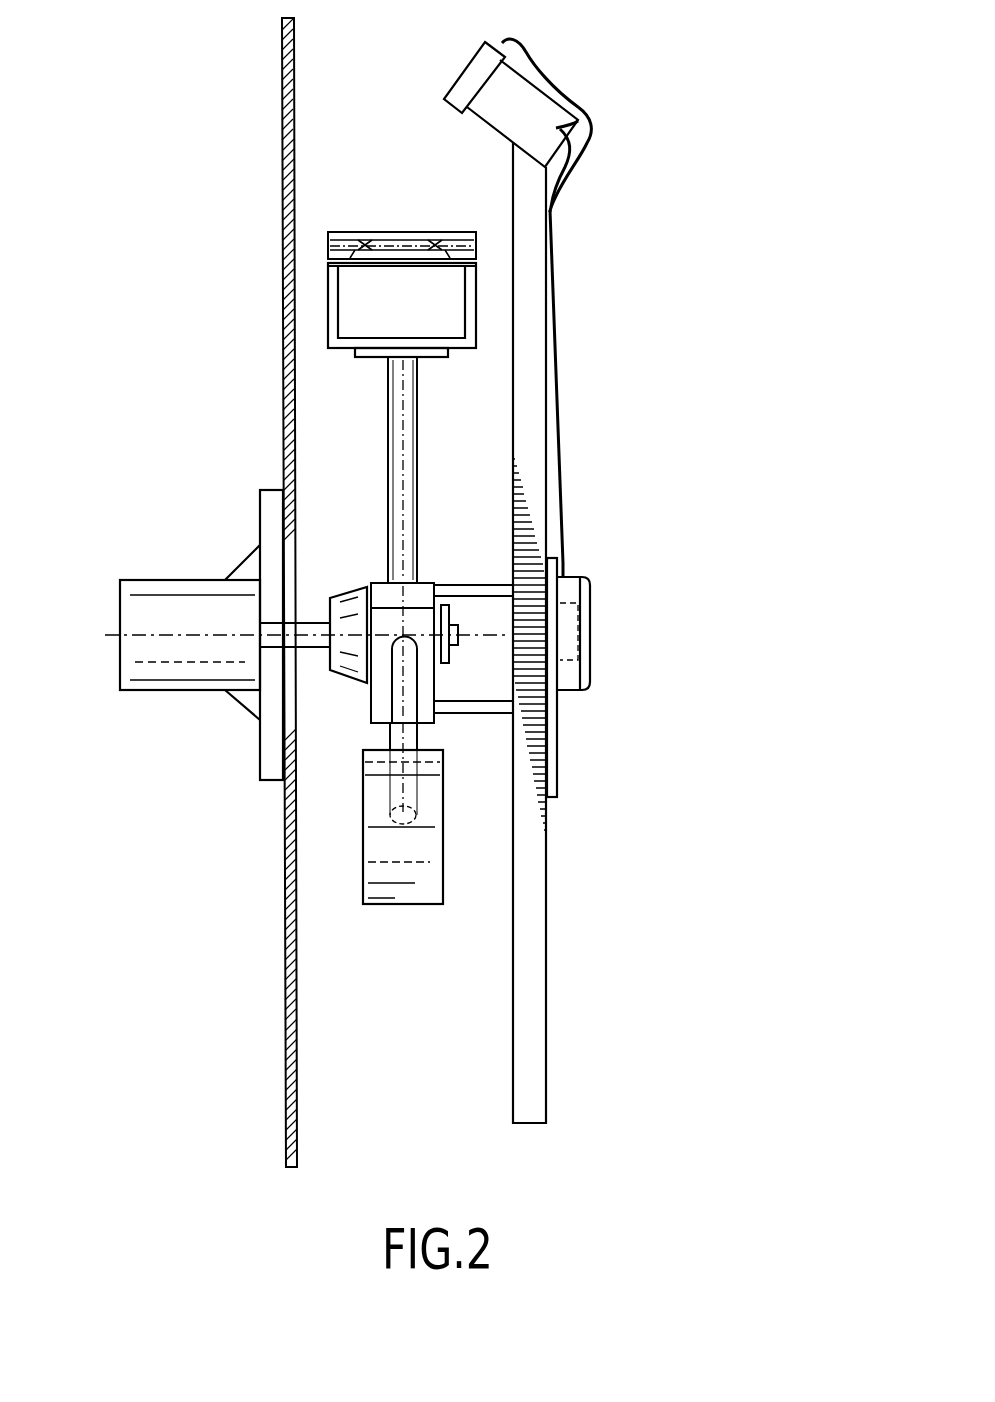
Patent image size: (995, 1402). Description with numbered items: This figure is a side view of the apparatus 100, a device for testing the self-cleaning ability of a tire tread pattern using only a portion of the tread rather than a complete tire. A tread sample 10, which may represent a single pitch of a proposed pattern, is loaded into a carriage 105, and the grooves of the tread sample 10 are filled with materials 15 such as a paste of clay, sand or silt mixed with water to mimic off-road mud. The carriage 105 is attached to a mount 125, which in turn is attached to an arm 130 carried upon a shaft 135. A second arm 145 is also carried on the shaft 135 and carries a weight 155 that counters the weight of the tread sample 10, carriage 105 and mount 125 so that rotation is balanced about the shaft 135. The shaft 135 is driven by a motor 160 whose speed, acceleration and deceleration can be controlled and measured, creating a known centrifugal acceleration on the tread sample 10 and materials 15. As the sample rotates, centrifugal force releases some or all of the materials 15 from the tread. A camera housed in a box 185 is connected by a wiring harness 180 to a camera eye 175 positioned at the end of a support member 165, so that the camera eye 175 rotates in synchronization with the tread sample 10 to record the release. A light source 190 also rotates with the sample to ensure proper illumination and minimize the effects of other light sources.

The apparatus 100 is at (729, 110).
The tread sample 10 is at (403, 233).
The materials 15 is at (367, 233).
The carriage 105 is at (332, 299).
The mount 125 is at (432, 358).
The arm 130 is at (405, 496).
The shaft 135 is at (305, 621).
The arm 145 is at (408, 722).
The weight 155 is at (398, 873).
The motor 160 is at (173, 608).
The support member 165 is at (538, 1049).
The camera eye 175 is at (462, 77).
The wiring harness 180 is at (565, 513).
The box 185 is at (591, 673).
The light source 190 is at (591, 127).